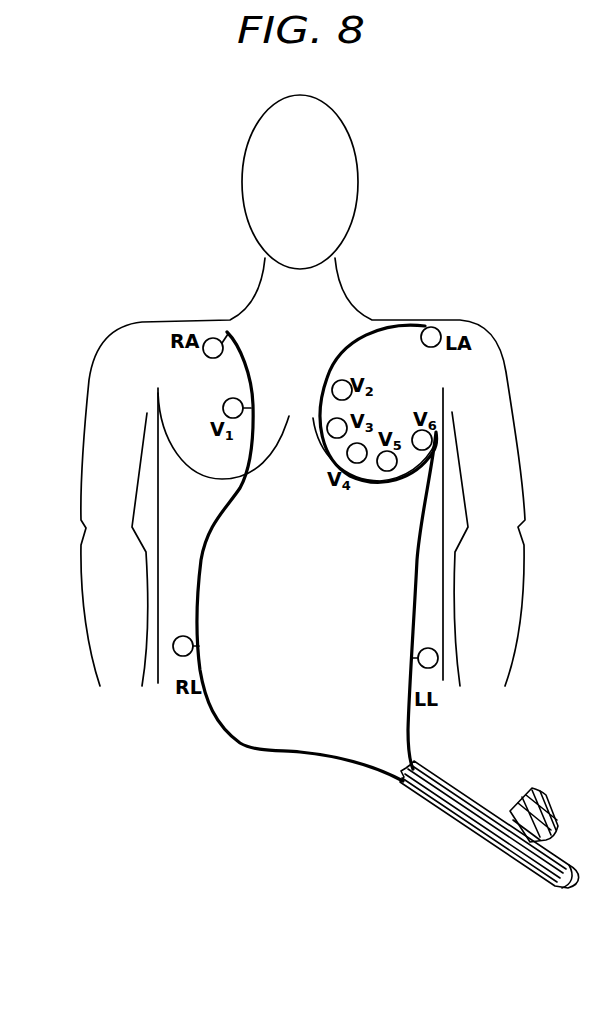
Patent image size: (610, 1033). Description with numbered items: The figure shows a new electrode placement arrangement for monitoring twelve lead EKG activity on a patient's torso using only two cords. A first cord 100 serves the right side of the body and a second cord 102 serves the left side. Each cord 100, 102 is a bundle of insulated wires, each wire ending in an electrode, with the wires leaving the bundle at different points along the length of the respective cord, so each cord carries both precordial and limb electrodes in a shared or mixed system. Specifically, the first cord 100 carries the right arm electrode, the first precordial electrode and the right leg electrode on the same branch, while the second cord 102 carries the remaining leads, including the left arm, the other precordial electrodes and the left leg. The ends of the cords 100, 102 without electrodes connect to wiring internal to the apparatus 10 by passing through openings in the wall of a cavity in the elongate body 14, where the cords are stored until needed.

The apparatus 10 is at (483, 786).
The elongate body 14 is at (455, 821).
The first cord 100 is at (255, 389).
The second cord 102 is at (348, 361).